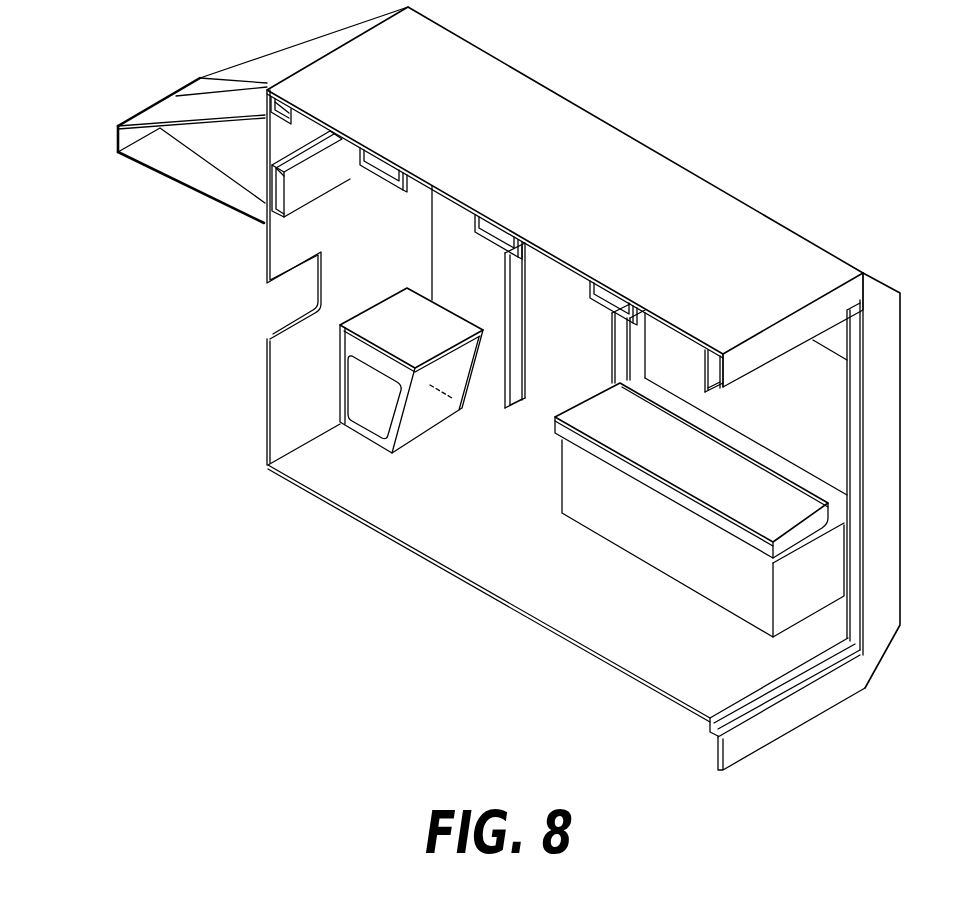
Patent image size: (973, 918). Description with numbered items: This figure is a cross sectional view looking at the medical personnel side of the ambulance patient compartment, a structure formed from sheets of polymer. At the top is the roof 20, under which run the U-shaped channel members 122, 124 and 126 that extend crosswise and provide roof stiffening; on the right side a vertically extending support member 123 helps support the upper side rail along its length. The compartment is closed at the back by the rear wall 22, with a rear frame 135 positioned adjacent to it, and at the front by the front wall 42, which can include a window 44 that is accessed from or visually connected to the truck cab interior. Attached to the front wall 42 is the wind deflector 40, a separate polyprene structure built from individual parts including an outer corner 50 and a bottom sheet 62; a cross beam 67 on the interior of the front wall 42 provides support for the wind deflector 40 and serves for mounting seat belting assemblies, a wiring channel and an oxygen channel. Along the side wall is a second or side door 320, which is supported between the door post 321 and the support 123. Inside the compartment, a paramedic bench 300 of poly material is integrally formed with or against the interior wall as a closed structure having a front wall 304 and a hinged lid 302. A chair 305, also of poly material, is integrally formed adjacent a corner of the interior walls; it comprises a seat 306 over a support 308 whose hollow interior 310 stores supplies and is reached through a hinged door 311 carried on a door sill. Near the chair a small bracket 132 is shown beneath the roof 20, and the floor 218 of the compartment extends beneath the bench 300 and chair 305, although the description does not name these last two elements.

The wind deflector 40 is at (138, 83).
The outer corner 50 is at (112, 158).
The bottom sheet 62 is at (218, 184).
The cross beam 67 is at (305, 192).
The mounting bracket 132 is at (298, 111).
The U-shaped channel member 122 is at (386, 168).
The U-shaped channel member 124 is at (500, 234).
The U-shaped channel member 126 is at (612, 299).
The door post 321 is at (458, 278).
The roof 20 is at (580, 178).
The side door 320 is at (588, 356).
The vertically extending support member 123 is at (647, 343).
The rear wall 22 is at (889, 360).
The rear frame 135 is at (708, 392).
The window 44 is at (270, 340).
The front wall 42 is at (284, 374).
The seat 306 is at (424, 389).
The chair 305 is at (392, 389).
The hinged door 311 is at (368, 418).
The support 308 is at (433, 408).
The hollow interior 310 is at (440, 384).
The hinged lid 302 is at (708, 474).
The paramedic bench 300 is at (670, 511).
The front wall 304 is at (665, 562).
The floor 218 is at (578, 602).